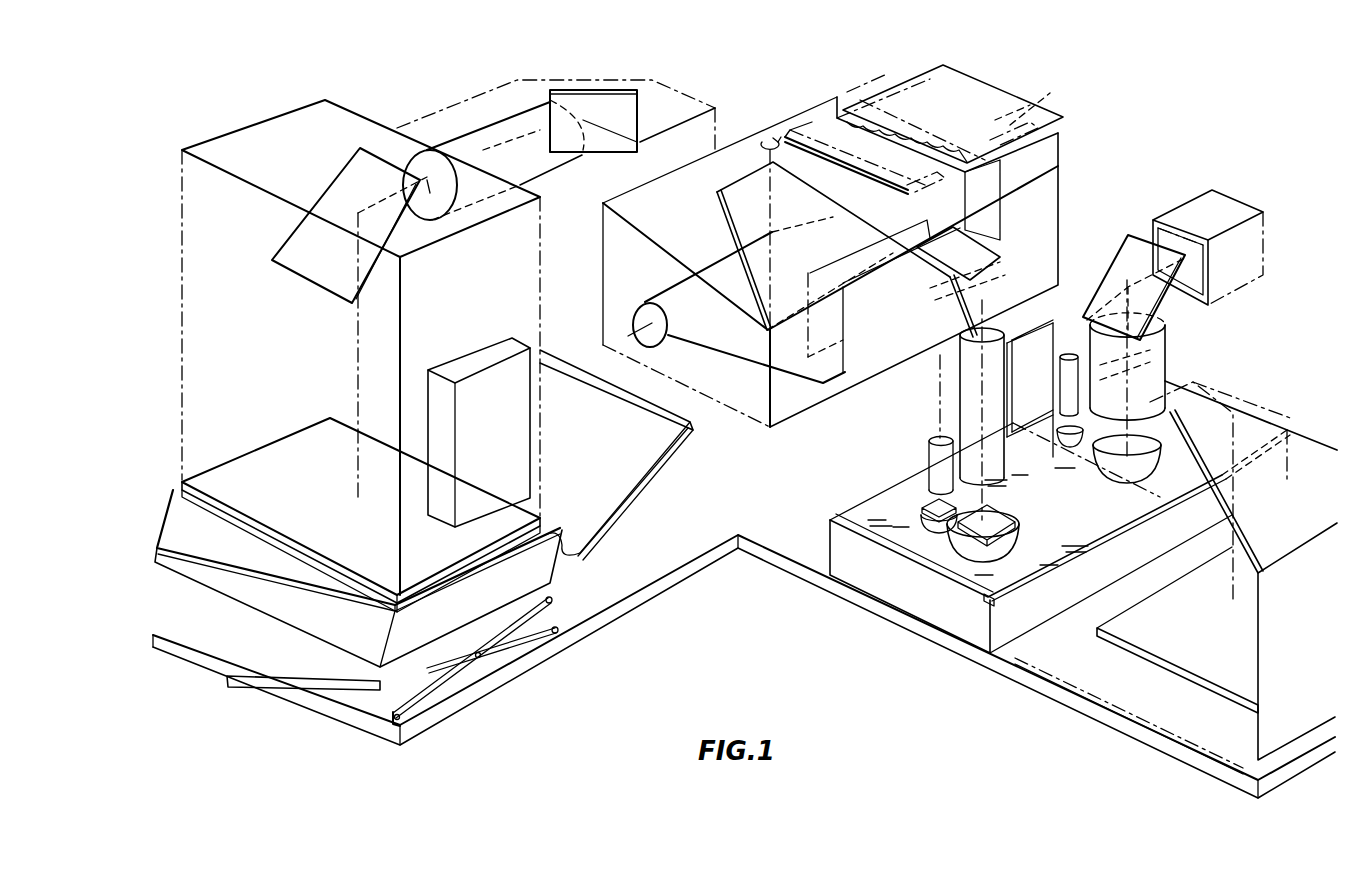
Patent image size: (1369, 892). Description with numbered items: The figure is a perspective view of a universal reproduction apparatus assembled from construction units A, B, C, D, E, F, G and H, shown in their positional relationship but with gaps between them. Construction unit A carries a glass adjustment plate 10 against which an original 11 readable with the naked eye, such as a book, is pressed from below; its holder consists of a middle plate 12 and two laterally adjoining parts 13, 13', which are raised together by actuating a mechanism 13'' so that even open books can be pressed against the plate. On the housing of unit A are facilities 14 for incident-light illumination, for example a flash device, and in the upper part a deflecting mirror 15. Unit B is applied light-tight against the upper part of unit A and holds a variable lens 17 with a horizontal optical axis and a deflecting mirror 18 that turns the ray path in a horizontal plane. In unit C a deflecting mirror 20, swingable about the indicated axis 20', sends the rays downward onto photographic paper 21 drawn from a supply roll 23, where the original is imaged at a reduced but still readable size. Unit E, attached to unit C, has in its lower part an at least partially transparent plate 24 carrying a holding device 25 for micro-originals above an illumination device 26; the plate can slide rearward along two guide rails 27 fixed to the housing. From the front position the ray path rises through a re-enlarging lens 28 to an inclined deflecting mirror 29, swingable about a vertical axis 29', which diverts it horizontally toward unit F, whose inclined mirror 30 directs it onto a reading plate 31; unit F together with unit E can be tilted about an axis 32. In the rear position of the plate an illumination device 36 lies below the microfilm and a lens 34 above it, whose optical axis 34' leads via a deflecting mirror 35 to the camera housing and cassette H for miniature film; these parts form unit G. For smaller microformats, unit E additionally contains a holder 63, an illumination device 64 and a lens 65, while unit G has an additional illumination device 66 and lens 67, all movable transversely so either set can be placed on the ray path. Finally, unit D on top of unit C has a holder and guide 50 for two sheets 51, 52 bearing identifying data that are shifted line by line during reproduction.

The construction unit A is at (250, 124).
The unit B is at (517, 75).
The unit C is at (768, 132).
The unit D is at (868, 75).
The unit E is at (905, 597).
The unit F is at (1295, 410).
The unit G is at (1110, 252).
The camera housing and film cassette H is at (1175, 207).
The adjustment plate 10 is at (240, 473).
The original 11 is at (470, 611).
The middle plate 12 is at (567, 577).
The laterally adjoining part 13 is at (303, 704).
The laterally adjoining part 13' is at (635, 494).
The mechanism 13'' is at (475, 676).
The facilities for incident-light illumination 14 is at (478, 363).
The deflecting mirror 15 is at (300, 252).
The variable lens 17 is at (477, 137).
The deflecting mirror 18 is at (605, 98).
The deflecting mirror 20 is at (820, 246).
The vane pivot axis 20' is at (805, 280).
The photographic paper 21 is at (737, 330).
The supply roll 23 is at (678, 330).
The transparent plate 24 is at (870, 517).
The holding device 25 is at (1005, 516).
The illumination device 26 is at (1000, 542).
The guide rails 27 is at (840, 515).
The lens 28 is at (962, 355).
The deflecting mirror 29 is at (961, 282).
The vertical axis 29' is at (947, 396).
The inclined mirror 30 is at (1295, 514).
The reading plate 31 is at (1170, 663).
The axis 32 is at (1170, 745).
The lens 34 is at (1150, 370).
The optical axis 34' is at (1157, 368).
The deflecting mirror 35 is at (1103, 293).
The illumination device 36 is at (1140, 475).
The holder and guide 50 is at (1038, 99).
The sheet 51 is at (833, 120).
The sheet 52 is at (967, 83).
The holder 63 is at (924, 505).
The illumination device 64 is at (925, 526).
The lens 65 is at (930, 442).
The additional illumination device 66 is at (1058, 442).
The lens 67 is at (1060, 390).